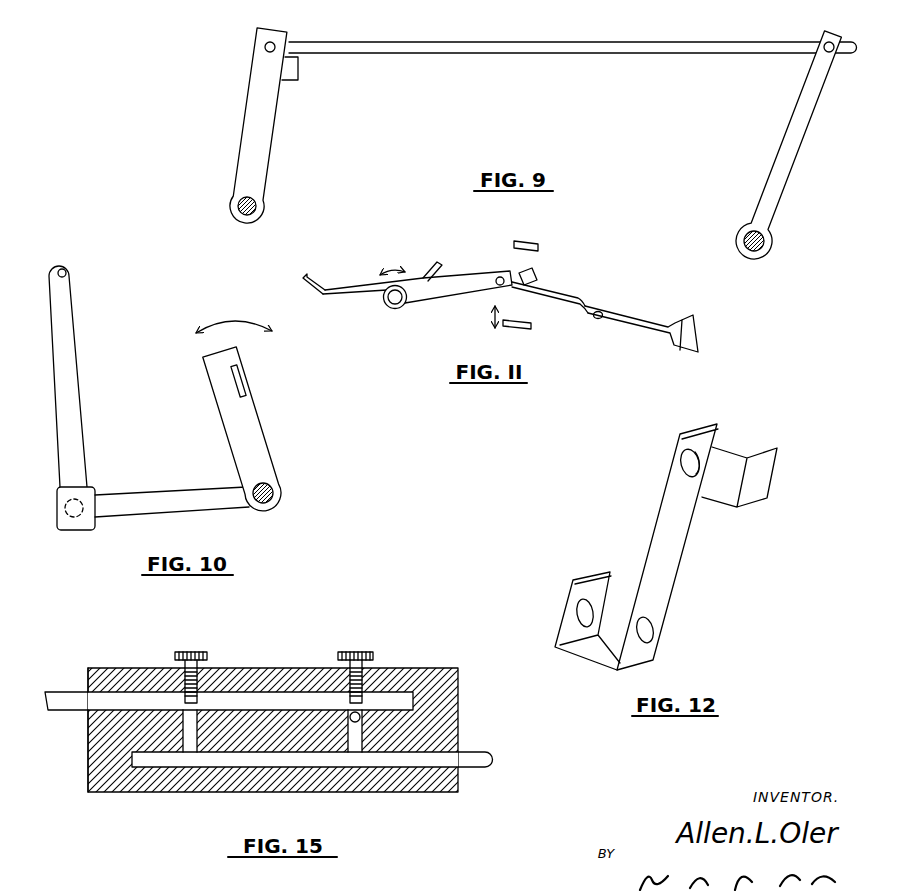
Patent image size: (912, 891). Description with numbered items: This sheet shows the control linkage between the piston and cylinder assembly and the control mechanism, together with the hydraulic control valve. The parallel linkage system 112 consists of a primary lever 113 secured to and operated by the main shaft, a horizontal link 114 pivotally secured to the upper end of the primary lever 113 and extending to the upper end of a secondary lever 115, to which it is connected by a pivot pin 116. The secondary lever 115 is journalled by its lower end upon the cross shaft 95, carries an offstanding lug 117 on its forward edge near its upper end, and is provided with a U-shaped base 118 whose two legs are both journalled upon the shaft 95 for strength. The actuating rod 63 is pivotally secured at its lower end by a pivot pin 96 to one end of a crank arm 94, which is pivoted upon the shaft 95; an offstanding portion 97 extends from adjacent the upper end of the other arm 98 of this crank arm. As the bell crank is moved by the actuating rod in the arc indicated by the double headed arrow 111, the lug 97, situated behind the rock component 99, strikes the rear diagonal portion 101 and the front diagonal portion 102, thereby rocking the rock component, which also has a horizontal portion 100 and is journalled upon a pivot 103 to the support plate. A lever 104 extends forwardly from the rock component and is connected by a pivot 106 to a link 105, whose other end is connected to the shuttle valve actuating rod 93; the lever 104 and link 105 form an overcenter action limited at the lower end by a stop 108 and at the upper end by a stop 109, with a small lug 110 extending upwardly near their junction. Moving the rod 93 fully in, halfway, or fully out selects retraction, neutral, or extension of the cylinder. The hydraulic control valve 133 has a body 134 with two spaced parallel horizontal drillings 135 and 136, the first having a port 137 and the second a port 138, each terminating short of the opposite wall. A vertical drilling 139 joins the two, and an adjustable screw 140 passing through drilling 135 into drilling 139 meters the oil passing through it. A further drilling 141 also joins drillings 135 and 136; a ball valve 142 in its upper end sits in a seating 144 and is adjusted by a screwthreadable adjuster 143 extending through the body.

In FIG. 10, the actuating rod 63 is at (58, 463).
In FIG. 11, the shuttle valve actuating rod 93 is at (632, 327).
In FIG. 10, the crank arm 94 is at (262, 455).
In FIG. 9, the shaft 95 is at (256, 206).
In FIG. 10, the shaft 95 is at (274, 494).
In FIG. 10, the pivot pin 96 is at (83, 523).
In FIG. 10, the offstanding portion 97 is at (231, 389).
In FIG. 10, the other arm 98 is at (209, 378).
In FIG. 11, the rock component 99 is at (363, 294).
In FIG. 11, the horizontal portion 100 is at (337, 291).
In FIG. 11, the rear diagonal portion 101 is at (306, 284).
In FIG. 11, the front diagonal portion 102 is at (426, 274).
In FIG. 11, the pivot 103 is at (398, 303).
In FIG. 11, the lever 104 is at (468, 292).
In FIG. 11, the link 105 is at (590, 306).
In FIG. 11, the pivot 106 is at (525, 293).
In FIG. 11, the stop 108 is at (513, 328).
In FIG. 11, the stop 109 is at (539, 247).
In FIG. 11, the lug 110 is at (538, 275).
In FIG. 10, the double headed arrow 111 is at (234, 314).
In FIG. 9, the parallel linkage system 112 is at (542, 80).
In FIG. 9, the primary lever 113 is at (800, 151).
In FIG. 9, the horizontal link 114 is at (503, 42).
In FIG. 9, the secondary lever 115 is at (251, 121).
In FIG. 12, the secondary lever 115 is at (680, 472).
In FIG. 9, the pivot pin 116 is at (285, 42).
In FIG. 12, the pivot pin 116 is at (700, 453).
In FIG. 9, the offstanding lug 117 is at (299, 70).
In FIG. 12, the offstanding lug 117 is at (767, 483).
In FIG. 12, the U-shaped base 118 is at (583, 653).
In FIG. 15, the hydraulic control valve 133 is at (460, 688).
In FIG. 15, the body 134 is at (452, 721).
In FIG. 15, the horizontal drilling 135 is at (100, 698).
In FIG. 15, the horizontal drilling 136 is at (370, 760).
In FIG. 15, the port 137 is at (86, 692).
In FIG. 15, the port 138 is at (467, 762).
In FIG. 15, the vertical drilling 139 is at (193, 742).
In FIG. 15, the adjustable screw 140 is at (186, 651).
In FIG. 15, the further drilling 141 is at (340, 733).
In FIG. 15, the ball valve 142 is at (350, 715).
In FIG. 15, the screwthreadable adjuster 143 is at (354, 651).
In FIG. 15, the seating 144 is at (359, 719).